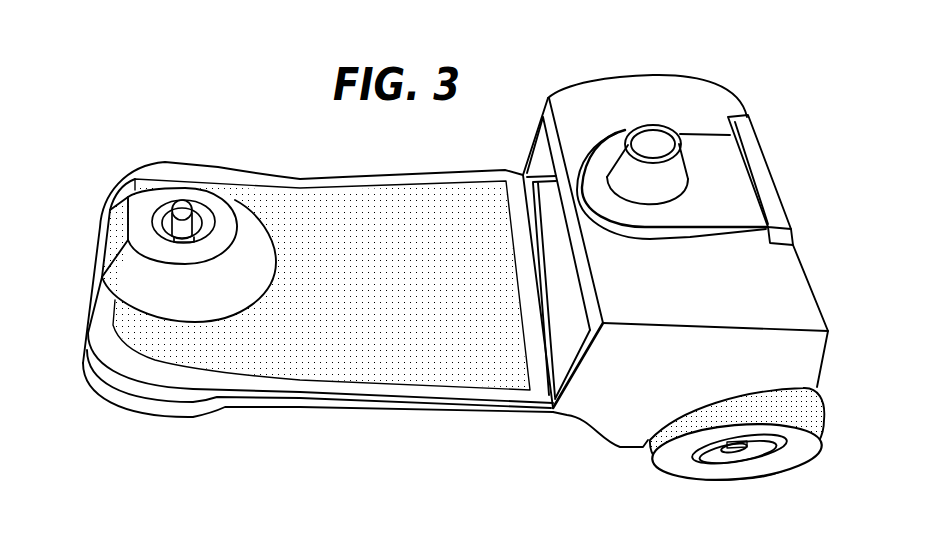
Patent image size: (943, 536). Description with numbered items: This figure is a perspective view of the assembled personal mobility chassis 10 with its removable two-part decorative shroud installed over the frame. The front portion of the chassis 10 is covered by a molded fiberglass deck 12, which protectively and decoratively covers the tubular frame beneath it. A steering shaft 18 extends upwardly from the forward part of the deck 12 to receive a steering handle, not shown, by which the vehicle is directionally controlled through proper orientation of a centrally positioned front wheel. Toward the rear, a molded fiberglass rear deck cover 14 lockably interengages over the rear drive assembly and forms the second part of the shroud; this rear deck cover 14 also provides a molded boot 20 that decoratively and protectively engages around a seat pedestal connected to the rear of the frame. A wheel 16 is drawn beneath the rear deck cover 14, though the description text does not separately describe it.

The personal mobility chassis 10 is at (102, 148).
The molded fiberglass deck 12 is at (345, 176).
The molded fiberglass rear deck cover 14 is at (614, 80).
The wheel 16 is at (650, 456).
The steering shaft 18 is at (183, 204).
The molded boot 20 is at (651, 125).